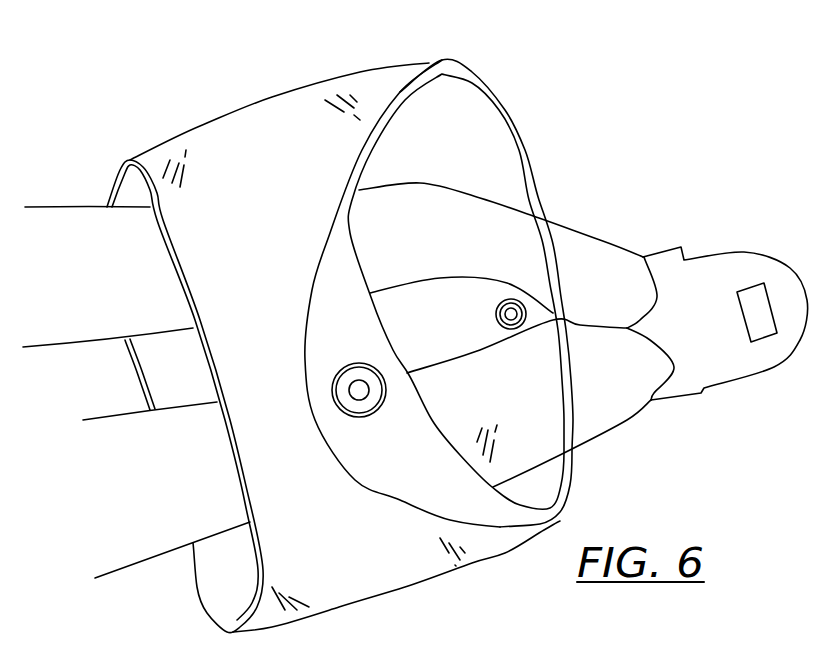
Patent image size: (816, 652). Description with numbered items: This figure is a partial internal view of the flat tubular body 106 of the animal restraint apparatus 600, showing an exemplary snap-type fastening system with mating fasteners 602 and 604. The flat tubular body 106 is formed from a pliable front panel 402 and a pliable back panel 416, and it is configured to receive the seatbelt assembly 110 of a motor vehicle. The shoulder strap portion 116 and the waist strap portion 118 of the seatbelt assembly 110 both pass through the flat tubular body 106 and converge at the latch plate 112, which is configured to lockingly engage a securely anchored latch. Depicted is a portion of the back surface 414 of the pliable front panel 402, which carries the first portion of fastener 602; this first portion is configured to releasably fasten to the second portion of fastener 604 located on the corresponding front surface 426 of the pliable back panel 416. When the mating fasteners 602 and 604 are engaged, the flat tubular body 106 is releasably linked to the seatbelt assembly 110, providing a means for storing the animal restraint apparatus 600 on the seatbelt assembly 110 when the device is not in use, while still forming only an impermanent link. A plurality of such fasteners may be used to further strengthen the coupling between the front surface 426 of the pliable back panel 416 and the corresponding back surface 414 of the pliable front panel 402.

The flat tubular body 106 is at (220, 67).
The animal restraint apparatus 600 is at (657, 103).
The pliable back panel 416 is at (465, 128).
The front surface 426 is at (495, 173).
The shoulder strap portion 116 is at (100, 291).
The back surface 414 is at (357, 331).
The second portion of fastener 604 is at (494, 313).
The latch plate 112 is at (733, 333).
The waist strap portion 118 is at (167, 493).
The pliable front panel 402 is at (357, 561).
The first portion of fastener 602 is at (381, 418).
The seatbelt assembly 110 is at (681, 473).